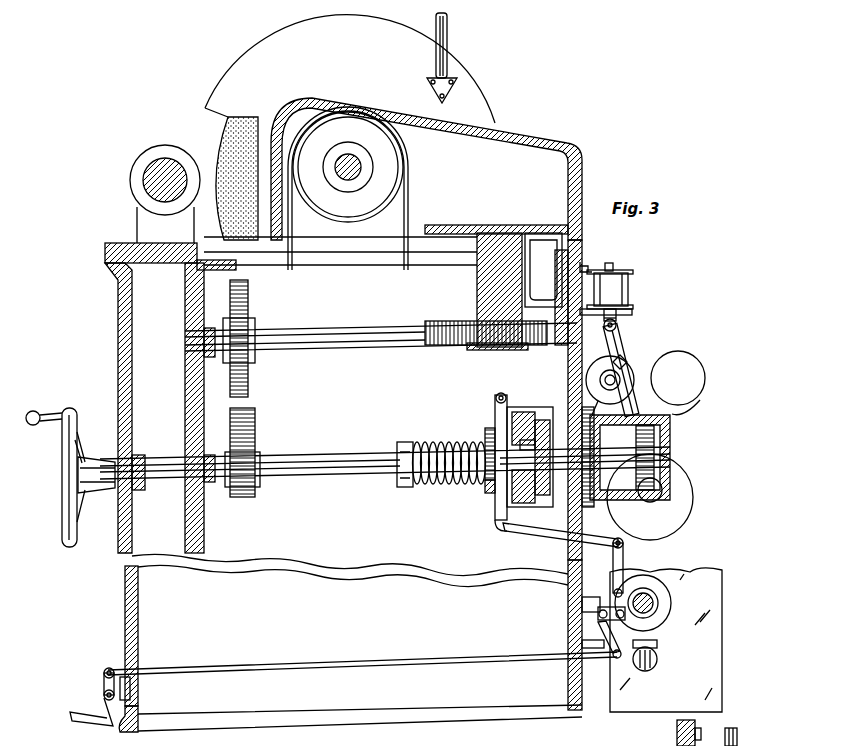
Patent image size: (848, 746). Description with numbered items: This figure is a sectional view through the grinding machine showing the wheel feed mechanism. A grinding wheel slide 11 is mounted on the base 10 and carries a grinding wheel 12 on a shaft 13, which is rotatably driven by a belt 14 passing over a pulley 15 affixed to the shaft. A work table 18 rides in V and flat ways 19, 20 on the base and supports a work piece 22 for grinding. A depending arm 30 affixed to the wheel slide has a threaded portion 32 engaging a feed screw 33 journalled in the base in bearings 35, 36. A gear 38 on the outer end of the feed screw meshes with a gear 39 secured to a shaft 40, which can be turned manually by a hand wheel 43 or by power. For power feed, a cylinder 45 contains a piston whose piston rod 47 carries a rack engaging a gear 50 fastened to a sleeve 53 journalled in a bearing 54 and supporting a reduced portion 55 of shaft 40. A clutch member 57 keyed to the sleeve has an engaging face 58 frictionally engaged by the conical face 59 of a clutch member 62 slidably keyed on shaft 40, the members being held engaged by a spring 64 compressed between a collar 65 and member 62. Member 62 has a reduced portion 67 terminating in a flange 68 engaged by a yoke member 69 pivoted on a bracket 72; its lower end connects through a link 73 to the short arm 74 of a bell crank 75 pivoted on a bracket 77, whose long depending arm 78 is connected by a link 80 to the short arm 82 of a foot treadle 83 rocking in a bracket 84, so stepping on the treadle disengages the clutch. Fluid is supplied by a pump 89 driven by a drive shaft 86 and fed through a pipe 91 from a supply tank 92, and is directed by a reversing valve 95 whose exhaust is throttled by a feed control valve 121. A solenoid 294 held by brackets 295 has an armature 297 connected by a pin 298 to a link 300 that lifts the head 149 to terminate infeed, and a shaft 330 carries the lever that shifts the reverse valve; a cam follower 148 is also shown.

The base 10 is at (125, 612).
The grinding wheel slide 11 is at (528, 138).
The grinding wheel 12 is at (222, 136).
The shaft 13 is at (362, 169).
The belt 14 is at (408, 188).
The pulley 15 is at (376, 150).
The work table 18 is at (130, 243).
The V way 19 is at (108, 272).
The flat way 20 is at (183, 275).
The work piece 22 is at (148, 180).
The depending arm 30 is at (477, 288).
The threaded portion 32 is at (488, 324).
The feed screw 33 is at (418, 330).
The bearing 35 is at (204, 333).
The bearing 36 is at (546, 289).
The gear 38 is at (248, 309).
The gear 39 is at (255, 426).
The shaft 40 is at (345, 456).
The hand wheel 43 is at (76, 548).
The cylinder 45 is at (694, 494).
The piston rod 47 is at (656, 498).
The gear 50 is at (672, 448).
The sleeve 53 is at (632, 457).
The bearing 54 is at (572, 465).
The reduced portion 55 is at (543, 420).
The clutch member 57 is at (545, 508).
The engaging face 58 is at (524, 505).
The conical face 59 is at (520, 412).
The clutch member 62 is at (522, 505).
The spring 64 is at (438, 444).
The collar 65 is at (402, 443).
The reduced portion 67 is at (487, 428).
The flange 68 is at (487, 490).
The yoke member 69 is at (496, 412).
The bracket 72 is at (496, 396).
The link 73 is at (624, 557).
The short arm 74 is at (606, 607).
The bell crank 75 is at (600, 632).
The bracket 77 is at (582, 604).
The long depending arm 78 is at (582, 645).
The link 80 is at (400, 663).
The short arm 82 is at (104, 684).
The foot treadle 83 is at (104, 714).
The bracket 84 is at (132, 690).
The drive shaft 86 is at (658, 604).
The fluid pressure pump 89 is at (668, 594).
The pipe 91 is at (647, 671).
The supply tank 92 is at (706, 646).
The reversing valve 95 is at (706, 377).
The feed control valve 121 is at (630, 352).
The cam follower 148 is at (670, 400).
The head 149 is at (628, 360).
The solenoid 294 is at (612, 290).
The brackets 295 is at (586, 262).
The armature 297 is at (614, 267).
The pin 298 is at (617, 325).
The link 300 is at (618, 333).
The shaft 330 is at (738, 733).